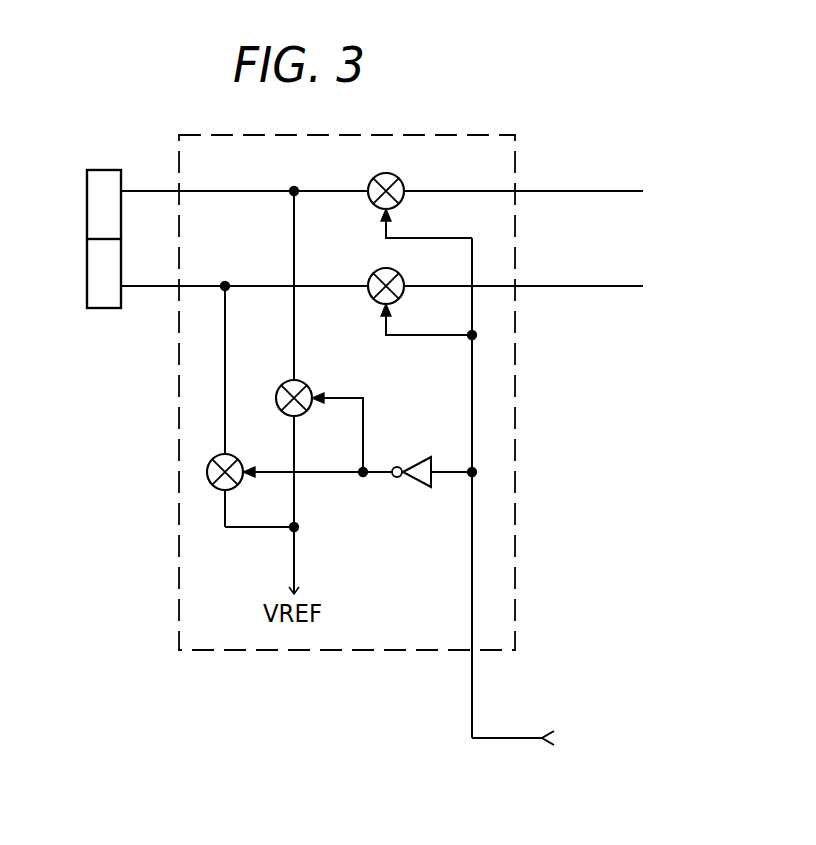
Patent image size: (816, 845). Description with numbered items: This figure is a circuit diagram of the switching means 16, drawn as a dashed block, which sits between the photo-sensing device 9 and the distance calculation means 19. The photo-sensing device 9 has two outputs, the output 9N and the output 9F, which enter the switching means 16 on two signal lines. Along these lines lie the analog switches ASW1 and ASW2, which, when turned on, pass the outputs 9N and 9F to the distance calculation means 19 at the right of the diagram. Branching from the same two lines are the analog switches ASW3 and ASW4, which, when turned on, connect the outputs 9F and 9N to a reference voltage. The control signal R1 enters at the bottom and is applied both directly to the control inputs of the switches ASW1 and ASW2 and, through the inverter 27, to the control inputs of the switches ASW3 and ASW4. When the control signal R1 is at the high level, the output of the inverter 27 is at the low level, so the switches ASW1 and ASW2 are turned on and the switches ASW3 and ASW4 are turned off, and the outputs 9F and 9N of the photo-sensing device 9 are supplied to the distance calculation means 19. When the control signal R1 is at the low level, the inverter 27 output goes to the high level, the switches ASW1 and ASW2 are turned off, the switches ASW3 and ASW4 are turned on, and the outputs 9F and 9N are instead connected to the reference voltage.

The photo-sensing device 9 is at (87, 228).
The output of the photo-sensing device 9N is at (104, 170).
The output of the photo-sensing device 9F is at (95, 312).
The switching means 16 is at (517, 421).
The distance calculation means 19 is at (663, 187).
The inverter 27 is at (417, 488).
The analog switch ASW1 is at (398, 178).
The analog switch ASW2 is at (377, 257).
The analog switch ASW3 is at (307, 387).
The analog switch ASW4 is at (251, 447).
The control signal R1 is at (530, 497).